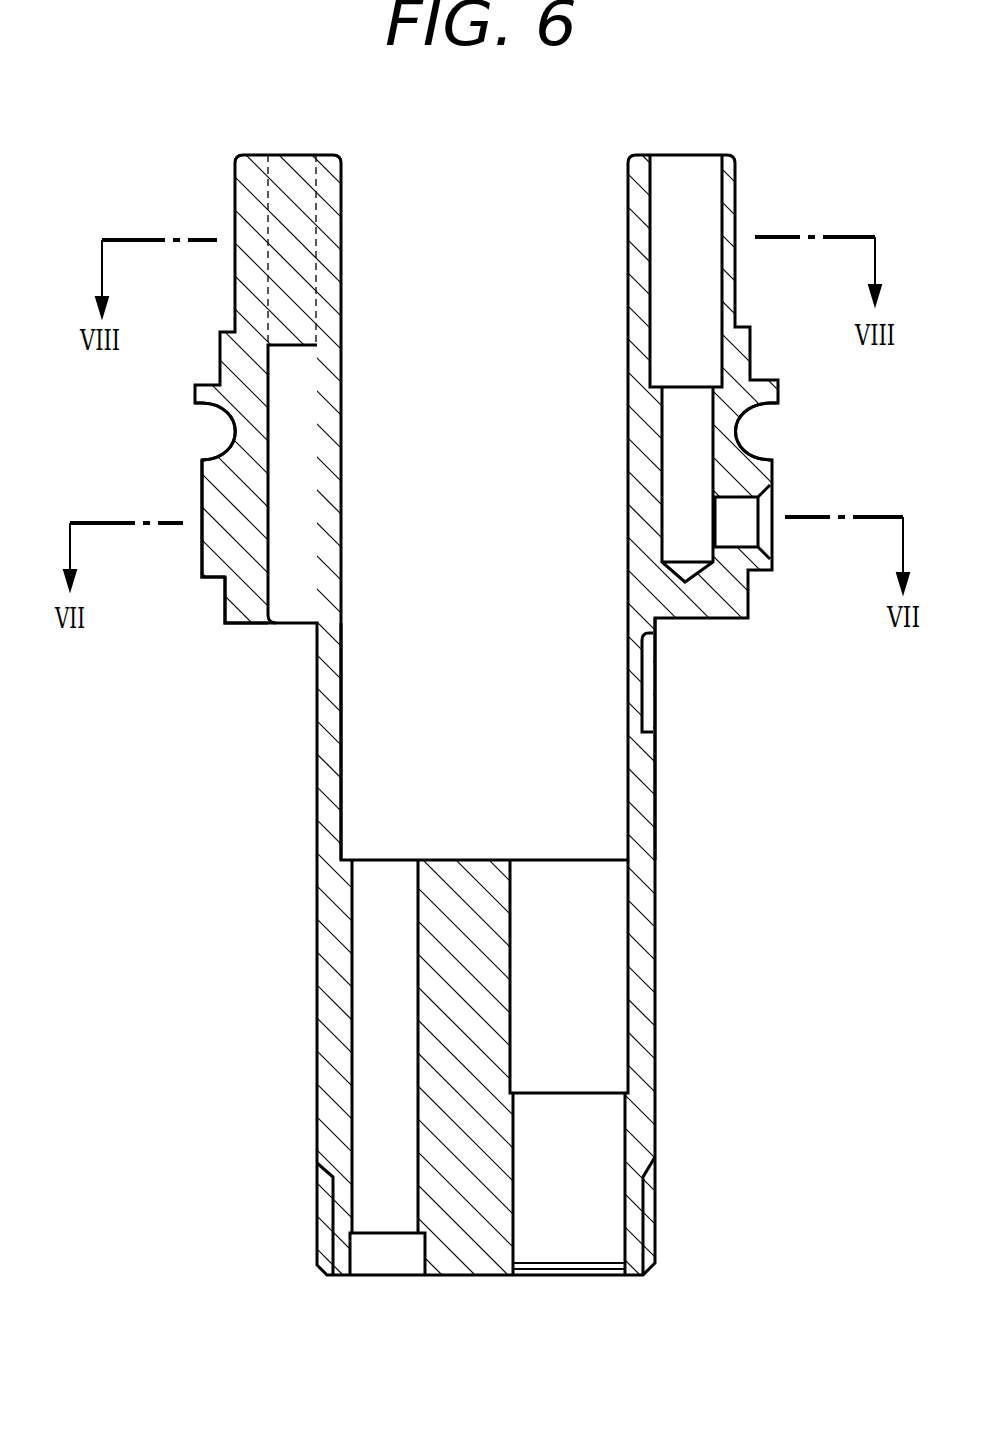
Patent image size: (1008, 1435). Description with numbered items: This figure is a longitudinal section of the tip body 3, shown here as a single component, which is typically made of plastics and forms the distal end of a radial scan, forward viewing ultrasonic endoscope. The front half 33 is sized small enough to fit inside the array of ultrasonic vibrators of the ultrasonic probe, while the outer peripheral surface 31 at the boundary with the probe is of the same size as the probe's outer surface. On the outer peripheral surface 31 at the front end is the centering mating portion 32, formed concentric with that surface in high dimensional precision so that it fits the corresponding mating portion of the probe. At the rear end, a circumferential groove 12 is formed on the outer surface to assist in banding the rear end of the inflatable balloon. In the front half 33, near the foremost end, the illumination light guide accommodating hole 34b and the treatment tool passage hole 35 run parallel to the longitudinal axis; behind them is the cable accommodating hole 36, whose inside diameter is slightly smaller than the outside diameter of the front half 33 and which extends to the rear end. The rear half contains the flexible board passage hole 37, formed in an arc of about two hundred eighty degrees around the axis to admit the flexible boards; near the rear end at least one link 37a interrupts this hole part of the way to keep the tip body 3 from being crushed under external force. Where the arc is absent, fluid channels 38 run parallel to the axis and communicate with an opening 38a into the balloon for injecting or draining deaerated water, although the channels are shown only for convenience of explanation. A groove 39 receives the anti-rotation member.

The tip body 3 is at (265, 750).
The circumferential groove 12 is at (213, 433).
The outer peripheral surface 31 is at (200, 537).
The centering mating portion 32 is at (223, 592).
The front half 33 is at (655, 830).
The illumination light guide accommodating hole 34b is at (320, 1060).
The treatment tool passage hole 35 is at (630, 1137).
The cable accommodating hole 36 is at (341, 822).
The flexible board passage hole 37 is at (263, 410).
The link 37a is at (290, 205).
The fluid channel 38 is at (736, 432).
The opening 38a is at (765, 523).
The groove 39 is at (655, 678).